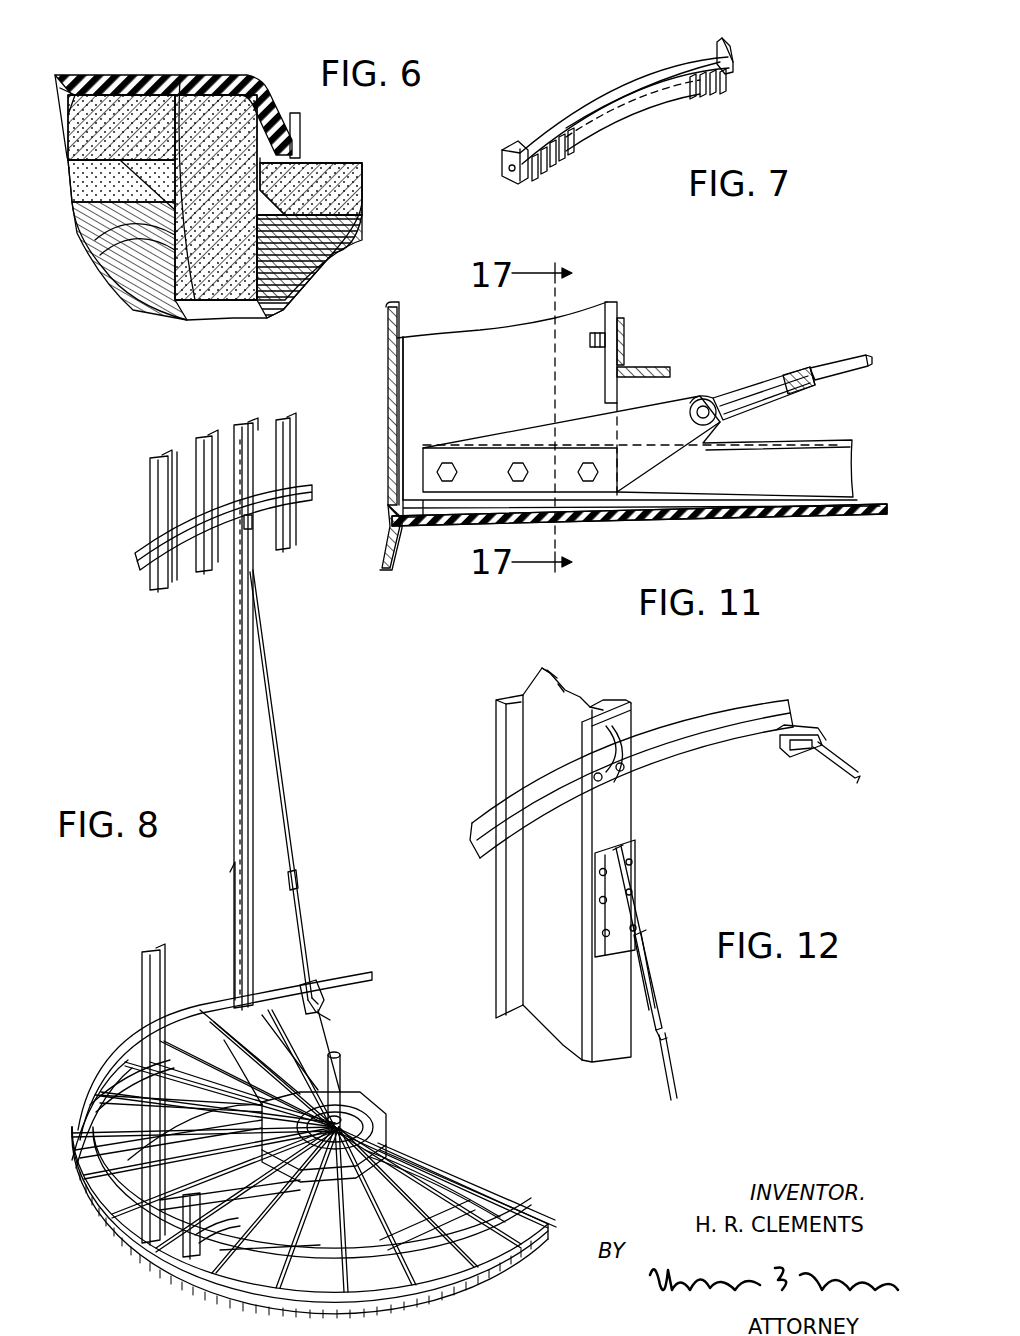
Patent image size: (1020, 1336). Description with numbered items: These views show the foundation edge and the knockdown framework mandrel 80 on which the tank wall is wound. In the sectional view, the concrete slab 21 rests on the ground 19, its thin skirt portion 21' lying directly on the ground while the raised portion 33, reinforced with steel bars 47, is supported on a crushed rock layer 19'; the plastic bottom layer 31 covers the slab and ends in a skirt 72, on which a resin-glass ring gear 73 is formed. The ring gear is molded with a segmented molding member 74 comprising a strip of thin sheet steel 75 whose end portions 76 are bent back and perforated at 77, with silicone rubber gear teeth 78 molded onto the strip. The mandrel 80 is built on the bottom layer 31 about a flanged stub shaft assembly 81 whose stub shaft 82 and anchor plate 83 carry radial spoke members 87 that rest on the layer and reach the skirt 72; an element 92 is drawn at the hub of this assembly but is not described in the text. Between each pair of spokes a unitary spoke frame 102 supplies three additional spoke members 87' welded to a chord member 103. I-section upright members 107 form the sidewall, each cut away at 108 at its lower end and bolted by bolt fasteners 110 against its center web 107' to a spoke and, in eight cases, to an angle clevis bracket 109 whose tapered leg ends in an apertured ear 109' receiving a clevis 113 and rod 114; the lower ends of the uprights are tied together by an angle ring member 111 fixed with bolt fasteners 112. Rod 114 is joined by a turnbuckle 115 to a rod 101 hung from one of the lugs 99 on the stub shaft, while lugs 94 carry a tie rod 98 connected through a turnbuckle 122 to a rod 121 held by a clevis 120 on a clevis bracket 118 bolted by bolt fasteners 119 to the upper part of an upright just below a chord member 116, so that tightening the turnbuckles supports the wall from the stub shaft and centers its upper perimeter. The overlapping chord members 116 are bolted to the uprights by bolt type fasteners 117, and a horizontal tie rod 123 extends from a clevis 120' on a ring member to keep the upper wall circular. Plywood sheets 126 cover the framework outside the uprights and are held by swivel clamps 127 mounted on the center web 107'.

In FIG. 6, the ground 19 is at (202, 197).
In FIG. 6, the crushed rock layer 19' is at (98, 185).
In FIG. 6, the slab 21 is at (98, 127).
In FIG. 6, the skirt portion 21' is at (332, 189).
In FIG. 6, the bottom layer 31 is at (128, 75).
In FIG. 11, the bottom layer 31 is at (678, 522).
In FIG. 8, the bottom layer 31 is at (508, 1248).
In FIG. 6, the raised portion 33 is at (66, 110).
In FIG. 6, the steel bars 47 is at (180, 80).
In FIG. 6, the skirt 72 is at (268, 118).
In FIG. 11, the skirt 72 is at (380, 545).
In FIG. 8, the skirt 72 is at (556, 1224).
In FIG. 6, the ring gear 73 is at (300, 128).
In FIG. 8, the ring gear 73 is at (458, 1288).
In FIG. 7, the molding member 74 is at (648, 138).
In FIG. 7, the sheet steel 75 is at (567, 124).
In FIG. 7, the end portions 76 is at (528, 158).
In FIG. 7, the perforations 77 is at (510, 180).
In FIG. 7, the gear teeth 78 is at (560, 170).
In FIG. 11, the framework mandrel 80 is at (412, 312).
In FIG. 12, the framework mandrel 80 is at (456, 745).
In FIG. 8, the framework mandrel 80 is at (160, 660).
In FIG. 8, the flanged stub shaft assembly 81 is at (392, 1068).
In FIG. 8, the stub shaft 82 is at (333, 1052).
In FIG. 8, the anchor plate 83 is at (386, 1140).
In FIG. 11, the spoke members 87 is at (735, 455).
In FIG. 8, the spoke members 87 is at (281, 1124).
In FIG. 8, the additional spoke members 87' is at (166, 1132).
In FIG. 8, the hub ring 92 is at (372, 1120).
In FIG. 8, the lugs 94 is at (358, 1116).
In FIG. 8, the rod 98 is at (305, 975).
In FIG. 8, the lugs 99 is at (342, 1082).
In FIG. 8, the rod 101 is at (312, 1004).
In FIG. 8, the spoke frame 102 is at (430, 1186).
In FIG. 8, the chord member 103 is at (395, 1160).
In FIG. 11, the upright members 107 is at (532, 343).
In FIG. 12, the upright members 107 is at (563, 865).
In FIG. 8, the upright members 107 is at (182, 848).
In FIG. 11, the center web 107' is at (446, 399).
In FIG. 11, the cut away portion 108 is at (605, 408).
In FIG. 11, the clevis bracket 109 is at (571, 444).
In FIG. 8, the clevis bracket 109 is at (224, 1180).
In FIG. 11, the apertured ear 109' is at (693, 379).
In FIG. 11, the bolt fasteners 110 is at (449, 466).
In FIG. 11, the ring member 111 is at (643, 366).
In FIG. 8, the ring member 111 is at (520, 1196).
In FIG. 11, the bolt fasteners 112 is at (628, 336).
In FIG. 11, the clevis 113 is at (740, 380).
In FIG. 11, the rod 114 is at (856, 360).
In FIG. 8, the rod 114 is at (282, 1272).
In FIG. 8, the turnbuckle 115 is at (242, 1062).
In FIG. 12, the chord members 116 is at (706, 715).
In FIG. 8, the chord members 116 is at (140, 540).
In FIG. 12, the bolt type fasteners 117 is at (622, 745).
In FIG. 12, the clevis bracket 118 is at (638, 945).
In FIG. 8, the clevis bracket 118 is at (252, 522).
In FIG. 12, the bolt fasteners 119 is at (607, 895).
In FIG. 12, the clevis 120 is at (660, 942).
In FIG. 12, the clevis 120' is at (793, 756).
In FIG. 12, the rod 121 is at (675, 1096).
In FIG. 8, the rod 121 is at (282, 760).
In FIG. 8, the turnbuckle 122 is at (300, 880).
In FIG. 12, the tie rod 123 is at (840, 775).
In FIG. 11, the sheets 126 is at (388, 432).
In FIG. 8, the swivel clamps 127 is at (233, 872).